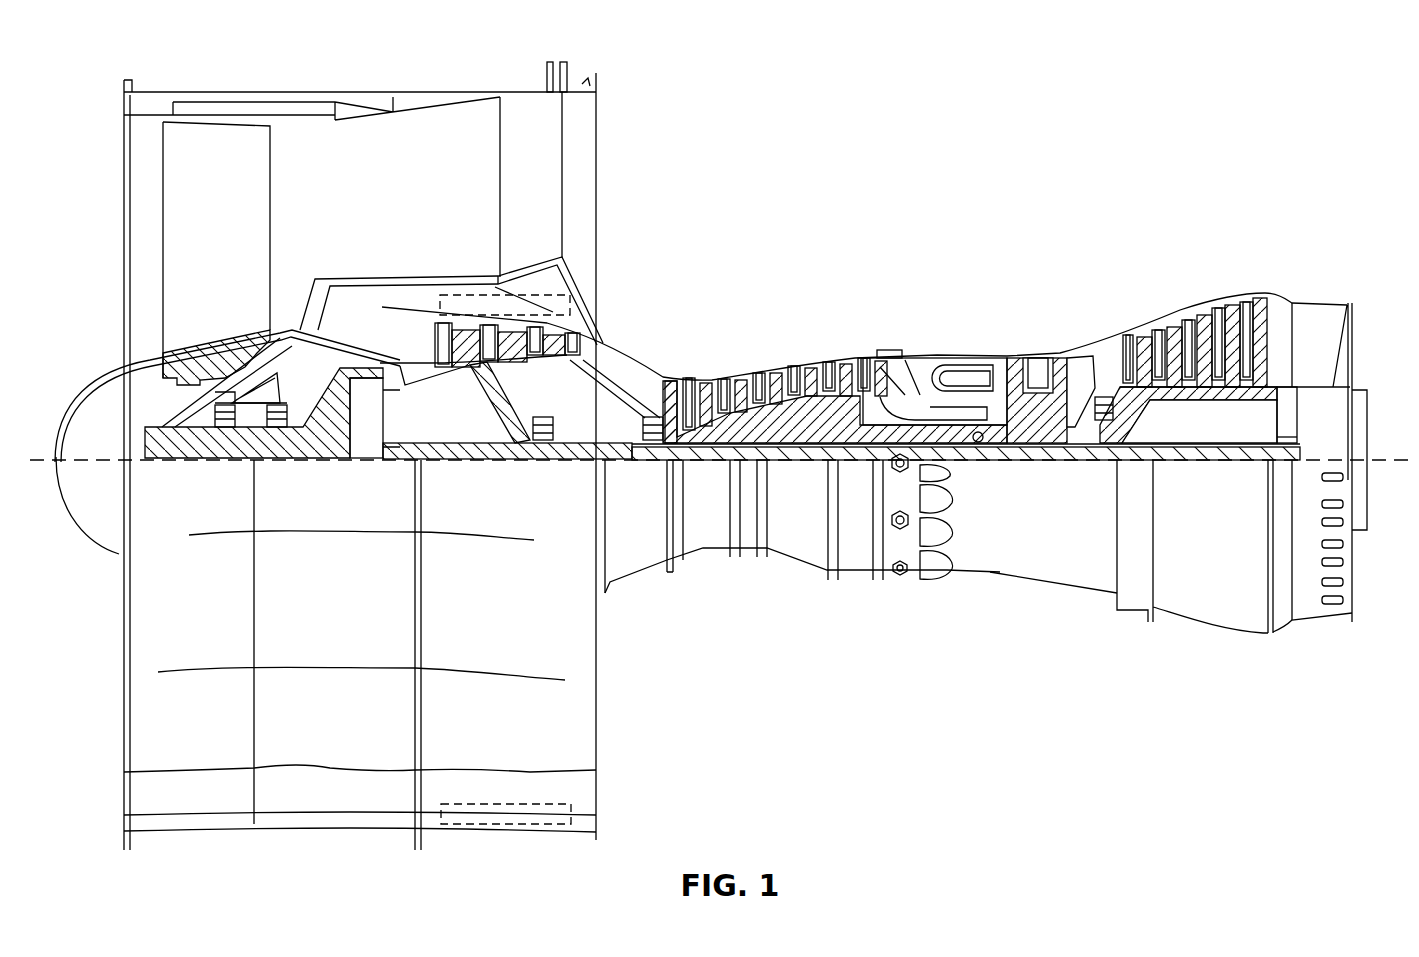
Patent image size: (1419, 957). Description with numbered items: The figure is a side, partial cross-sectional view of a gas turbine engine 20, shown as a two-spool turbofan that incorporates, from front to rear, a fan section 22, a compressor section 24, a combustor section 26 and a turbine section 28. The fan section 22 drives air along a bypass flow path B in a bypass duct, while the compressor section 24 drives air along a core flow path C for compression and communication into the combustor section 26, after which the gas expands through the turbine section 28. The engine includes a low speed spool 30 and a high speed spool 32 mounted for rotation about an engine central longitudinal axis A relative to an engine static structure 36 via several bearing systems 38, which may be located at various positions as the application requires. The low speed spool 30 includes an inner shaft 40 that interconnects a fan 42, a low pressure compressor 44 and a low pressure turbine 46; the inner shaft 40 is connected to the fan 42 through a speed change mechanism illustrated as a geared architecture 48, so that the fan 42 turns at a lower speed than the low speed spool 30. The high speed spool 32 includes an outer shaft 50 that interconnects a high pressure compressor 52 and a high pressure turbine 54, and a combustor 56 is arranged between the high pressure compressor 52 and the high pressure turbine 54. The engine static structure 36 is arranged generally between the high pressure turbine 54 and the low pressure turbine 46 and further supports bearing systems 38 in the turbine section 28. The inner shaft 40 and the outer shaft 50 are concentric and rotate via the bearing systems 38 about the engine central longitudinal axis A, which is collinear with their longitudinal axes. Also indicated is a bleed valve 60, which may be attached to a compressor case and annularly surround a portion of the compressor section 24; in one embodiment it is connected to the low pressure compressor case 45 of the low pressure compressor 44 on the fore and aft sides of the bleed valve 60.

The gas turbine engine 20 is at (1171, 129).
The fan section 22 is at (395, 80).
The compressor section 24 is at (790, 318).
The combustor section 26 is at (953, 320).
The turbine section 28 is at (1100, 296).
The low speed spool 30 is at (817, 462).
The high speed spool 32 is at (873, 408).
The engine static structure 36 is at (858, 580).
The bearing systems 38 is at (220, 427).
The inner shaft 40 is at (620, 467).
The fan 42 is at (205, 214).
The low pressure compressor 44 is at (513, 335).
The low pressure compressor case 45 is at (560, 268).
The low pressure turbine 46 is at (1207, 310).
The geared architecture 48 is at (352, 440).
The outer shaft 50 is at (980, 443).
The high pressure compressor 52 is at (777, 427).
The high pressure turbine 54 is at (1042, 355).
The combustor 56 is at (960, 375).
The bleed valve 60 is at (453, 285).
The engine central longitudinal axis A is at (1373, 457).
The bypass flow path B is at (440, 187).
The core flow path C is at (315, 318).